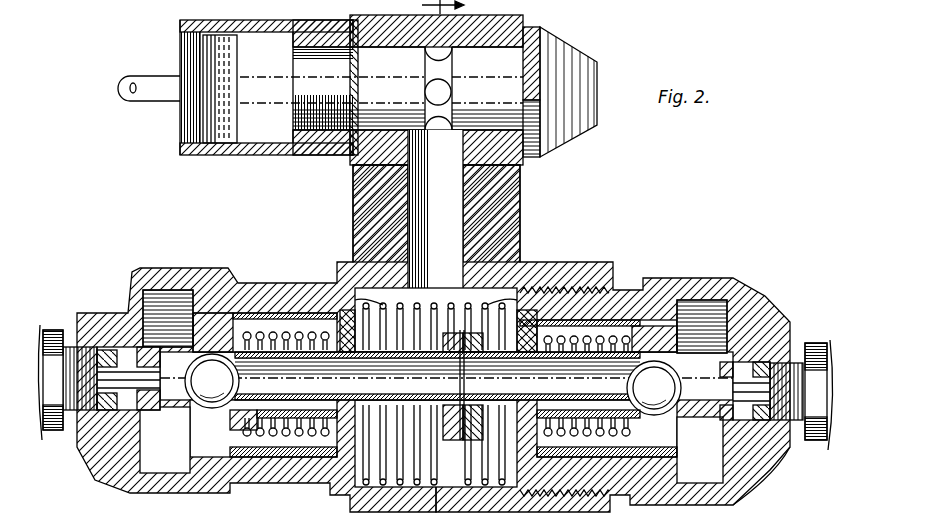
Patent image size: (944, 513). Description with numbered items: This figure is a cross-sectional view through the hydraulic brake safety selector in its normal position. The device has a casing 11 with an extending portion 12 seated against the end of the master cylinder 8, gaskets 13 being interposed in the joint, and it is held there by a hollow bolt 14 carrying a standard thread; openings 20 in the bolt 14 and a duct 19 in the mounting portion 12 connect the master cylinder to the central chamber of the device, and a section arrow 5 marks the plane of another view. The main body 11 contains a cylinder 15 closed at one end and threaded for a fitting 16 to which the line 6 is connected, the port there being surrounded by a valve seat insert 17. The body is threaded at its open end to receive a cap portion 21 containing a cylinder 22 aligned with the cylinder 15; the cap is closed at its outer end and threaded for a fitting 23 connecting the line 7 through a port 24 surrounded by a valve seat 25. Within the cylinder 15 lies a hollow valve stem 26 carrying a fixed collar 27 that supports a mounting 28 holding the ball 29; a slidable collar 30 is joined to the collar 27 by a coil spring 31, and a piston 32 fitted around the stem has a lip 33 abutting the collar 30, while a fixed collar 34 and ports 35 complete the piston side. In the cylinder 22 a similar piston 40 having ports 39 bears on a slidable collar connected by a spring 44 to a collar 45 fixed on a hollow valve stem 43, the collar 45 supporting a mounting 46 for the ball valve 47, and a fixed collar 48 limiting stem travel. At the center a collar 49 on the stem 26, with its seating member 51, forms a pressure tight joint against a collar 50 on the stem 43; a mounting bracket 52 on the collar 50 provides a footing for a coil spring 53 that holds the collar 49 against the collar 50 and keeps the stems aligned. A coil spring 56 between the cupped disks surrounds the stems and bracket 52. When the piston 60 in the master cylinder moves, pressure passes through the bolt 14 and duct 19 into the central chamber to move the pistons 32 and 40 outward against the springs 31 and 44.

The section line 5 is at (449, 10).
The line 6 is at (45, 345).
The line 7 is at (820, 445).
The master cylinder 8 is at (302, 147).
The casing 11 is at (248, 290).
The extending portion 12 is at (520, 206).
The gaskets 13 is at (355, 152).
The hollow bolt 14 is at (588, 60).
The cylinder 15 is at (190, 298).
The fitting 16 is at (65, 430).
The valve seat insert 17 is at (140, 348).
The duct 19 is at (455, 183).
The openings 20 is at (447, 88).
The cap portion 21 is at (700, 285).
The cylinder 22 is at (655, 305).
The fitting 23 is at (760, 462).
The port 24 is at (810, 345).
The valve seat 25 is at (752, 375).
The hollow valve stem 26 is at (295, 400).
The collar 27 is at (248, 450).
The mounting 28 is at (200, 432).
The ball 29 is at (212, 381).
The slidable collar 30 is at (305, 449).
The coil spring 31 is at (275, 333).
The piston 32 is at (305, 315).
The lip 33 is at (330, 412).
The fixed collar 34 is at (357, 414).
The ports 35 is at (340, 320).
The ports 39 is at (527, 320).
The piston 40 is at (578, 336).
The hollow valve stem 43 is at (606, 398).
The spring 44 is at (650, 335).
The collar 45 is at (702, 327).
The mounting 46 is at (660, 440).
The ball valve 47 is at (654, 388).
The fixed collar 48 is at (505, 418).
The collar 49 is at (430, 325).
The collar 50 is at (483, 393).
The seating member 51 is at (470, 456).
The mounting bracket 52 is at (406, 456).
The coil spring 53 is at (445, 405).
The coil spring 56 is at (480, 310).
The piston 60 is at (202, 145).